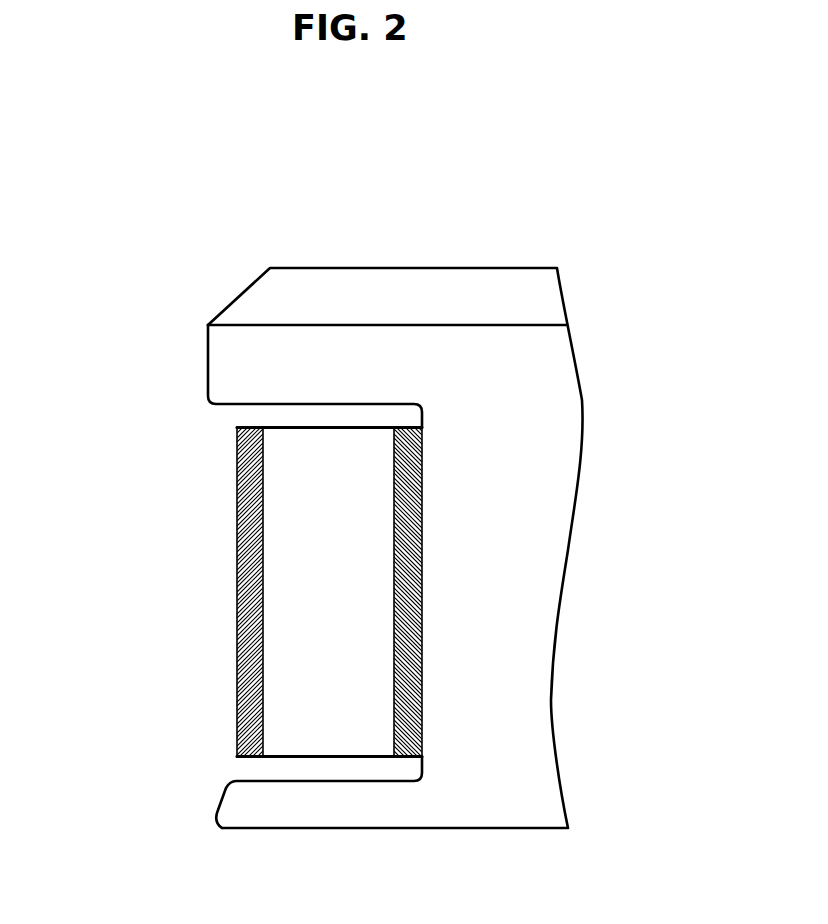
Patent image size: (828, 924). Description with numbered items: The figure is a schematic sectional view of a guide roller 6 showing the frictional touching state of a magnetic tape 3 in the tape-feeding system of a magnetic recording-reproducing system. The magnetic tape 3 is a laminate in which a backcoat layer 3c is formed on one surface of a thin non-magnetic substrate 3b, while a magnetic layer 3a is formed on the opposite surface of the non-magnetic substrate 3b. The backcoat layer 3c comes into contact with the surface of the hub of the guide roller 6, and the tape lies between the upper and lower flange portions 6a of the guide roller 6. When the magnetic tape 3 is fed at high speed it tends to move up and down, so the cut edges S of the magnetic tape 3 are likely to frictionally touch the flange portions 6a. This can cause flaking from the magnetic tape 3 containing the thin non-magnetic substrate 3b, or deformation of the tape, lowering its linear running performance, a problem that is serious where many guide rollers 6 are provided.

The magnetic tape 3 is at (315, 593).
The magnetic layer 3a is at (247, 538).
The non-magnetic substrate 3b is at (287, 677).
The backcoat layer 3c is at (410, 538).
The guide roller 6 is at (547, 382).
The flange portions 6a is at (233, 357).
The cut edges S is at (323, 423).